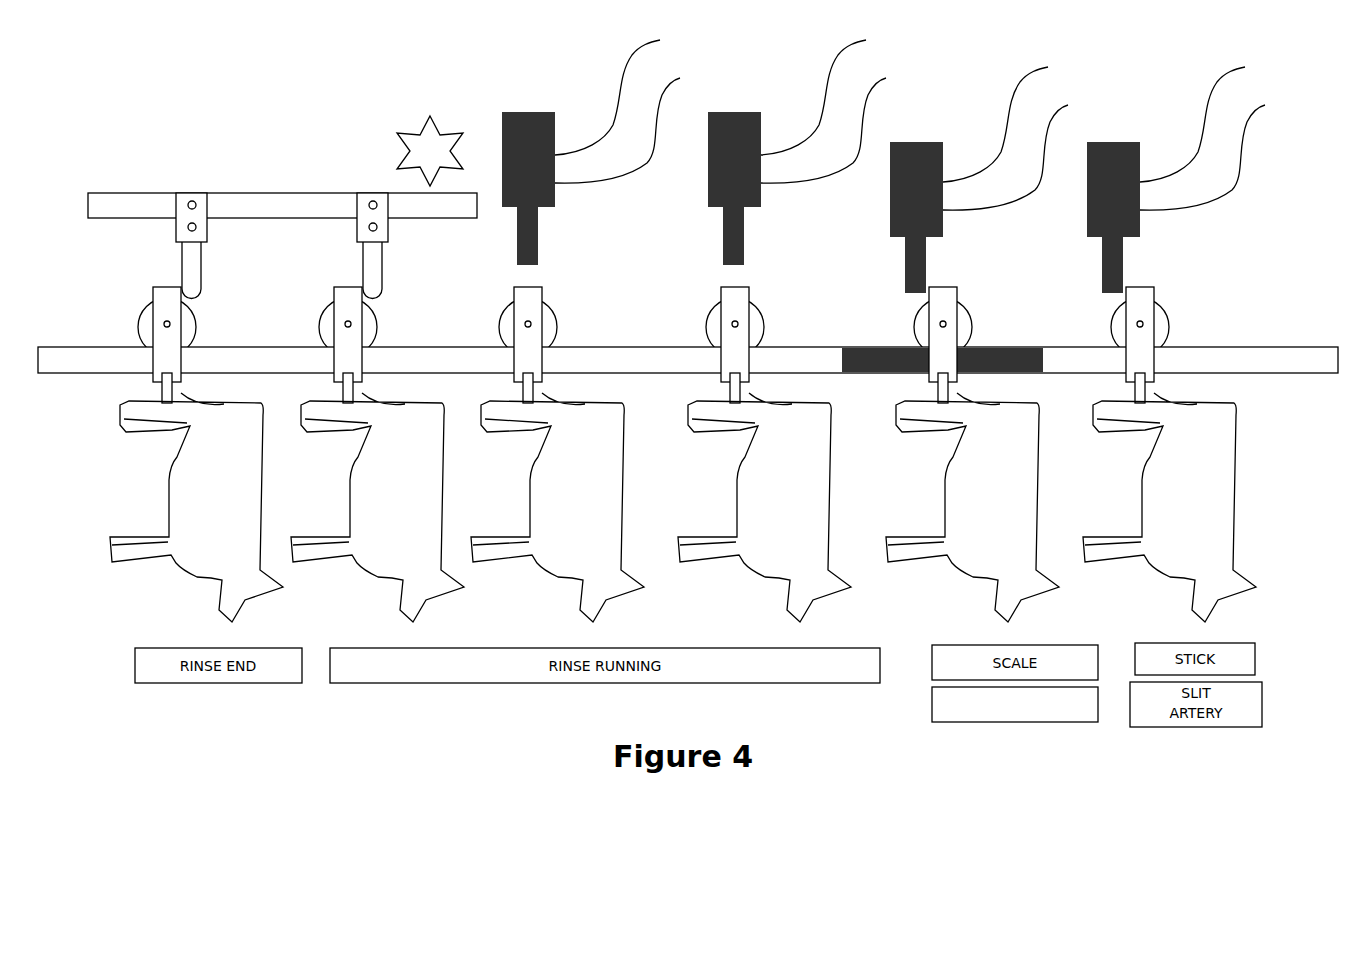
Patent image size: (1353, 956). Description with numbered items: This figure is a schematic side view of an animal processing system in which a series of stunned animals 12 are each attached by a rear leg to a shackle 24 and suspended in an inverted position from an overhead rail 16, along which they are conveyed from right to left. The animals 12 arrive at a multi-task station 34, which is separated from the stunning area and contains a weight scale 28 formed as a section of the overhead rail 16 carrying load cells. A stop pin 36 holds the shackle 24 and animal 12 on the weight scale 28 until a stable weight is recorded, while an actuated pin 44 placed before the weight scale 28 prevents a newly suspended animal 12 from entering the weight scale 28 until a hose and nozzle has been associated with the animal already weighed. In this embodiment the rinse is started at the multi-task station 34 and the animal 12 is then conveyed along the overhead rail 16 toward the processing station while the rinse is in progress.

The animal 12 is at (1234, 487).
The overhead rail 16 is at (1185, 358).
The shackle 24 is at (1145, 298).
The weight scale 28 is at (1143, 380).
The multi-task station 34 is at (1013, 733).
The stop pin 36 is at (923, 143).
The actuated pin 44 is at (1115, 145).